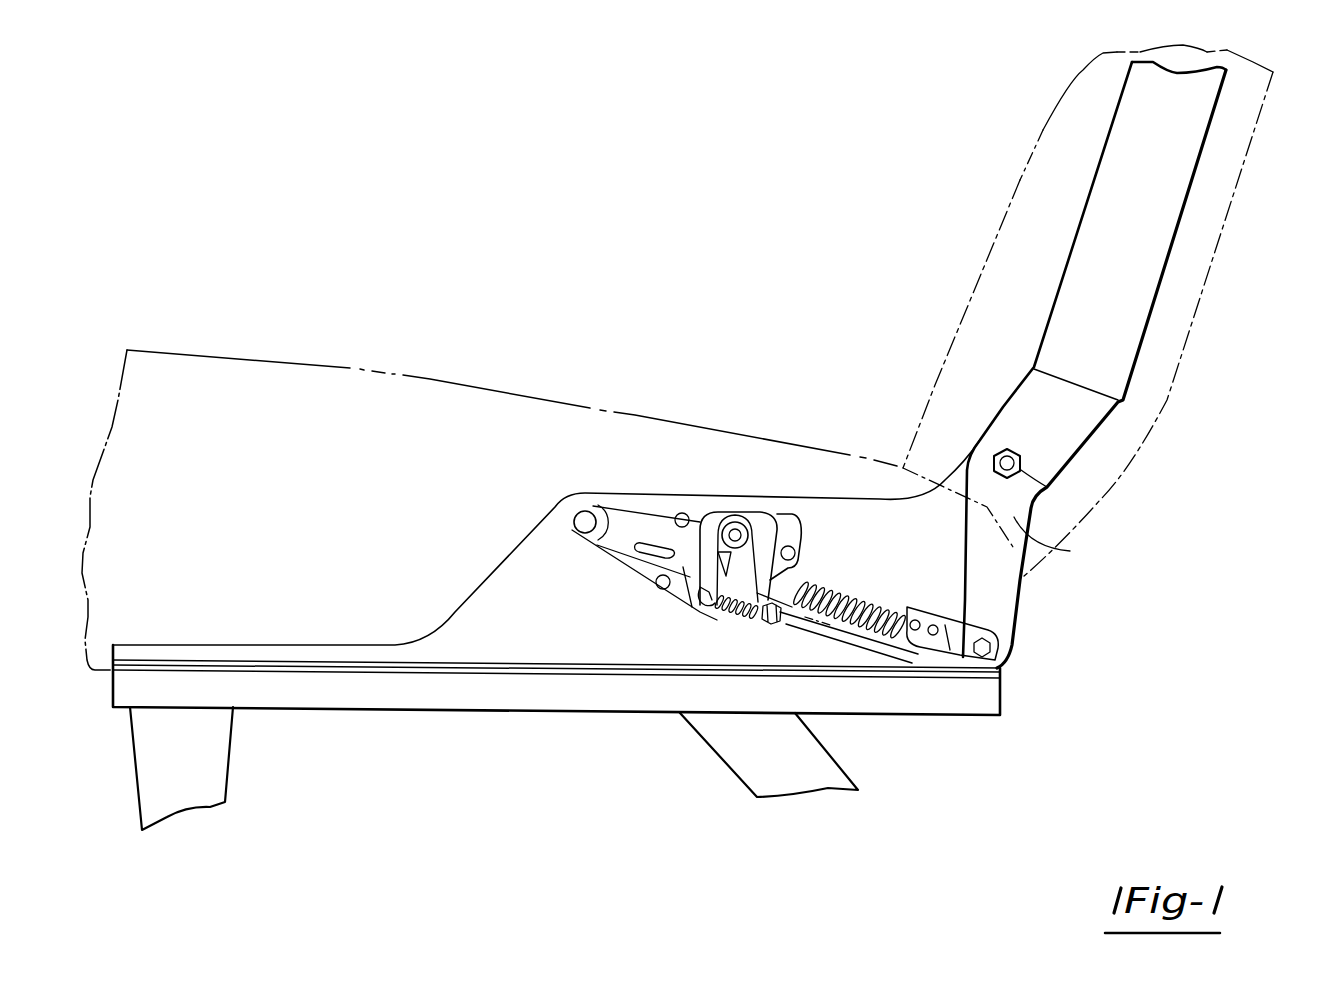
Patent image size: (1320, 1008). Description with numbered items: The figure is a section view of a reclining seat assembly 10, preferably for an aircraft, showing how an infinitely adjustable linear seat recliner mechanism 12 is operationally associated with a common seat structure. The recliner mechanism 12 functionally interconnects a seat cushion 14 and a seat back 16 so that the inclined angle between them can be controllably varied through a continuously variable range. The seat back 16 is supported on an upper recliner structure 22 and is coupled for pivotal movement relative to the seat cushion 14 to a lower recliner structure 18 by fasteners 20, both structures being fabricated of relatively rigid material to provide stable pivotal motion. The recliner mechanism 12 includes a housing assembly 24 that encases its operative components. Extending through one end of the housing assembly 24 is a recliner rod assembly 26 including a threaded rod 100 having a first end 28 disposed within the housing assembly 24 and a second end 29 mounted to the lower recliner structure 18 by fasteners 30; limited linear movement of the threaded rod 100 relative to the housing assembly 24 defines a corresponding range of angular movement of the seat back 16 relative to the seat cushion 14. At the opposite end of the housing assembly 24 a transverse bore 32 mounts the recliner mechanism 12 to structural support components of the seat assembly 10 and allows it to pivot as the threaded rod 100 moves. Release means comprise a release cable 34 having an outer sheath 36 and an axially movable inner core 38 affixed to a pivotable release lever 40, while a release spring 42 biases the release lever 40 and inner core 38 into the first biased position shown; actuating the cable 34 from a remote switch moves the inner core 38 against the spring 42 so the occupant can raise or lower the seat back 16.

The reclining seat assembly 10 is at (660, 360).
The infinitely adjustable linear seat recliner mechanism 12 is at (630, 580).
The seat cushion 14 is at (382, 372).
The seat back 16 is at (998, 218).
The lower recliner structure 18 is at (1070, 551).
The fasteners 20 is at (1047, 487).
The upper recliner structure 22 is at (1153, 297).
The housing assembly 24 is at (800, 538).
The recliner rod assembly 26 is at (846, 590).
The first end 28 is at (652, 537).
The second end 29 is at (945, 650).
The fasteners 30 is at (985, 652).
The transverse bore 32 is at (570, 530).
The release cable 34 is at (863, 650).
The outer sheath 36 is at (830, 636).
The inner core 38 is at (766, 622).
The release lever 40 is at (703, 603).
The release spring 42 is at (740, 612).
The threaded rod 100 is at (895, 607).